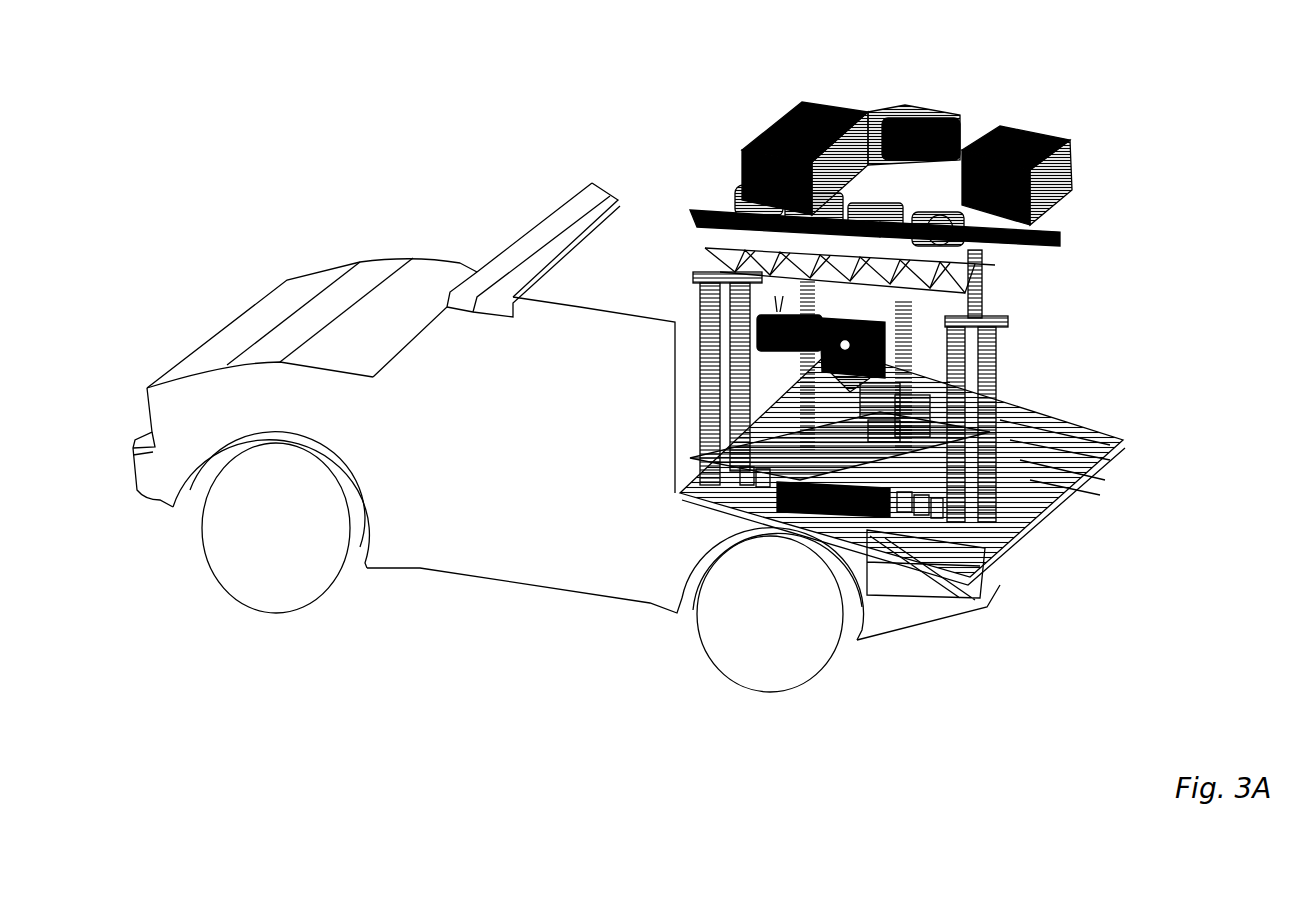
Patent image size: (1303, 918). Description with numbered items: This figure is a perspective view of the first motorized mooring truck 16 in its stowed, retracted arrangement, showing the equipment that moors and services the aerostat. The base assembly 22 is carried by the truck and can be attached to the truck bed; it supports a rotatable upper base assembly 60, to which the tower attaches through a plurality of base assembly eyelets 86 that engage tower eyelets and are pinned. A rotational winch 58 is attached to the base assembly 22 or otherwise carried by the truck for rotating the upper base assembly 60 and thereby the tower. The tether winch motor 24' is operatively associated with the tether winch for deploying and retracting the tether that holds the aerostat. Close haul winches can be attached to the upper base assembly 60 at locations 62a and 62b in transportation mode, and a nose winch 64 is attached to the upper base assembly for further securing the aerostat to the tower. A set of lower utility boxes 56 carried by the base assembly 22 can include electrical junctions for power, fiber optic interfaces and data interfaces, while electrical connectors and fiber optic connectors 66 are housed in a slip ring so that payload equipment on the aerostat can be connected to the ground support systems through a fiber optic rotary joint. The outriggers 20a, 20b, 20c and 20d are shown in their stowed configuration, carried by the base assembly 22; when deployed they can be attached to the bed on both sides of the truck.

The first motorized mooring truck 16 is at (279, 286).
The outrigger 20a is at (715, 400).
The outrigger 20b is at (735, 440).
The outrigger 20c is at (995, 495).
The support pillar 20d is at (960, 495).
The base assembly 22 is at (985, 290).
The tether winch motor 24' is at (752, 344).
The lower utility boxes 56 is at (780, 500).
The rotational winch 58 is at (745, 470).
The upper base assembly 60 is at (690, 245).
The close haul winch attachment location 62a is at (725, 215).
The close haul winch attachment location 62b is at (990, 250).
The nose winch 64 is at (935, 120).
The electrical connectors and fiber optic connectors 66 is at (900, 395).
The base assembly eyelets 86 is at (875, 110).